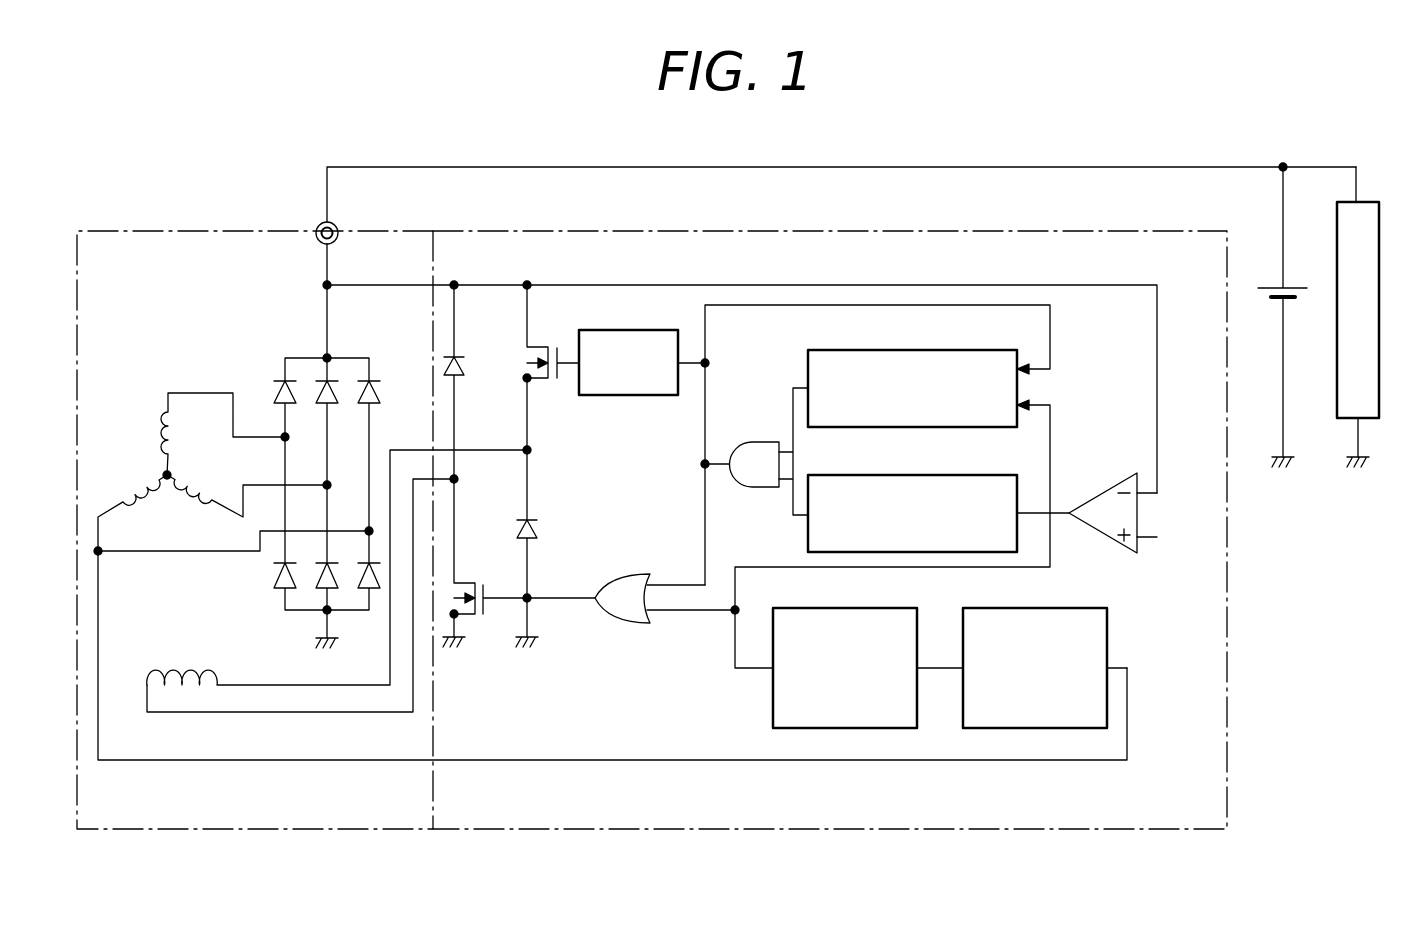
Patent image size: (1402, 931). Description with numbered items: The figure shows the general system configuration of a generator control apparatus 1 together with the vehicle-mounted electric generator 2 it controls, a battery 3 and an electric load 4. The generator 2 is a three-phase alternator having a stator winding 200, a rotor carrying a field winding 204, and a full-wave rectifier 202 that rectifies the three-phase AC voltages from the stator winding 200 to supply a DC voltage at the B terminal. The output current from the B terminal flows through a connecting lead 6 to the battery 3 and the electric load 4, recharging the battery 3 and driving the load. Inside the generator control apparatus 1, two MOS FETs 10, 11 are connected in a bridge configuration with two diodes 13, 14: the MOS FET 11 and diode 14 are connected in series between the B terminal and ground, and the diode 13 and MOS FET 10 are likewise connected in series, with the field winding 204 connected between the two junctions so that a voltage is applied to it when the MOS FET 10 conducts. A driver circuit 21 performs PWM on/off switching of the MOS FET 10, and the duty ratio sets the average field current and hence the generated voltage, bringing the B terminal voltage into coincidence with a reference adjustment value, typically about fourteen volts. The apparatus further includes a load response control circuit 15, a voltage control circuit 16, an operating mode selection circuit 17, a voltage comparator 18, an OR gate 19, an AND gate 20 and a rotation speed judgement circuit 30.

The generator control apparatus 1 is at (1118, 231).
The vehicle-mounted electric generator 2 is at (150, 231).
The battery 3 is at (1289, 288).
The electric load 4 is at (1365, 202).
The connecting lead 6 is at (1080, 167).
The MOS FET 10 is at (538, 346).
The MOS FET 11 is at (468, 583).
The diode 13 is at (531, 520).
The diode 14 is at (458, 357).
The load response control circuit 15 is at (968, 350).
The voltage control circuit 16 is at (968, 475).
The operating mode selection circuit 17 is at (862, 608).
The voltage comparator 18 is at (1106, 489).
The OR gate 19 is at (632, 574).
The AND gate 20 is at (762, 442).
The driver circuit 21 is at (640, 330).
The rotation speed judgement circuit 30 is at (1056, 608).
The stator winding 200 is at (166, 474).
The full-wave rectifier 202 is at (305, 357).
The field winding 204 is at (170, 673).